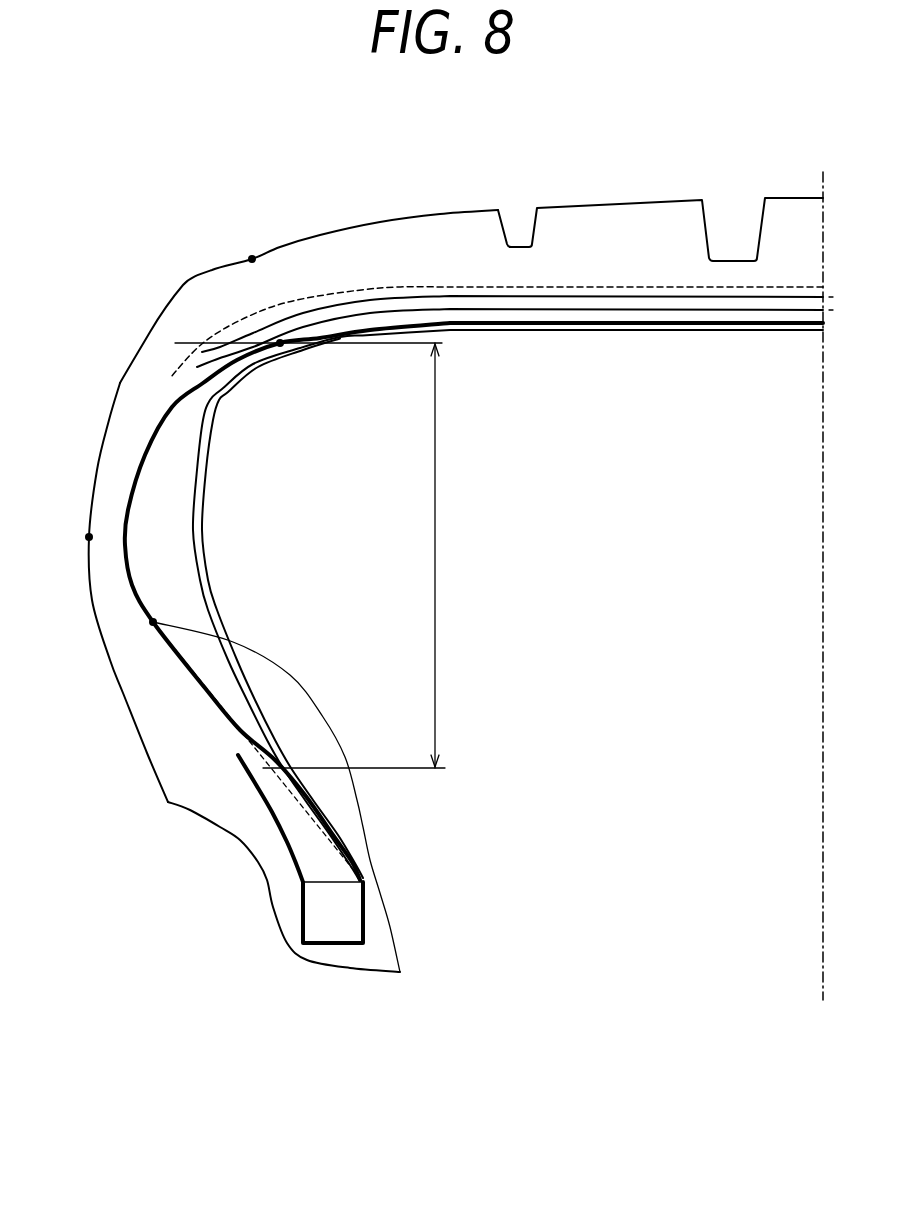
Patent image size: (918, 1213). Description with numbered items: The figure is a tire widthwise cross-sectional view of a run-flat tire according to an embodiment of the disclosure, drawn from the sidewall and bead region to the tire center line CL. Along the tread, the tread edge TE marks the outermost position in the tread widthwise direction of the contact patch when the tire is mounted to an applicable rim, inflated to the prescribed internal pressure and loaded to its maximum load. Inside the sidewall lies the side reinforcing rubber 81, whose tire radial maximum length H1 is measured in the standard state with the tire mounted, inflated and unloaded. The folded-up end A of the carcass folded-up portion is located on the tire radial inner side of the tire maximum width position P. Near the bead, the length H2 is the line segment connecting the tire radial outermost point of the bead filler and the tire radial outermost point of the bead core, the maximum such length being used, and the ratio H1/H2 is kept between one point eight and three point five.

The side reinforcing rubber 81 is at (165, 492).
The tread edge TE is at (247, 245).
The tire maximum width position P is at (80, 536).
The folded-up end of the carcass folded-up portion A is at (238, 755).
The tire radial maximum length of the side reinforcing rubber H1 is at (318, 555).
The length of line segment connecting bead filler outermost point and bead core oute H2 is at (276, 797).
The tire center line CL is at (823, 573).